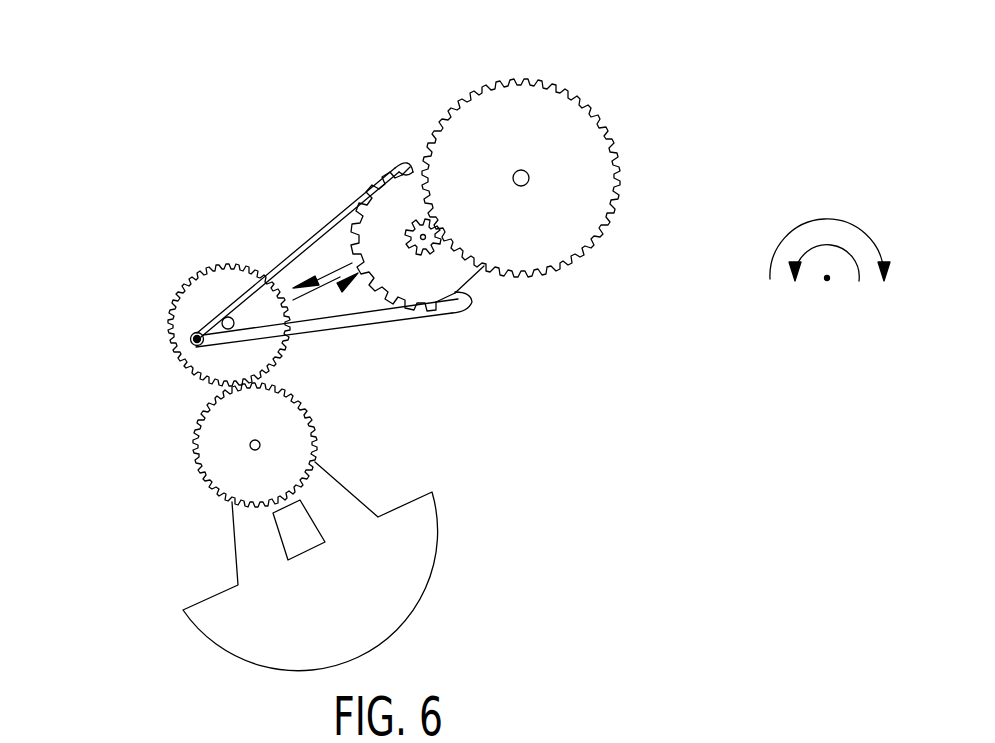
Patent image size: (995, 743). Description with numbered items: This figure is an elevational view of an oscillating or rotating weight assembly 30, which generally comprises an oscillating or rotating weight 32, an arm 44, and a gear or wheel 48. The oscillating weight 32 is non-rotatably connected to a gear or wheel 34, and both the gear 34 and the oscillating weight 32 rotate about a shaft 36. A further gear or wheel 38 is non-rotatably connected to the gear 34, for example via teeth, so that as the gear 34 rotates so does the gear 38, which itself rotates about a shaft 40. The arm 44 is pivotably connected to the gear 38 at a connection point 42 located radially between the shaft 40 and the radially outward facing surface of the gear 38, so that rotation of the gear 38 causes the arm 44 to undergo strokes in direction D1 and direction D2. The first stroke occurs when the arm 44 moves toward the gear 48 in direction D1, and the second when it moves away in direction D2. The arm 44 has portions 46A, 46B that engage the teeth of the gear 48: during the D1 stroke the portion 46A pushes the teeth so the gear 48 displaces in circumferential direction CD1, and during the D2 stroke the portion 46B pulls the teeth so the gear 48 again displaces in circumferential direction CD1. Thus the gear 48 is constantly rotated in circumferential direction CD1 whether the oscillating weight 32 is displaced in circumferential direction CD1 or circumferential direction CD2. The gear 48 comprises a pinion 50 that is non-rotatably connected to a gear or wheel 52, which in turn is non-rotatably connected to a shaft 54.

The oscillating weight assembly 30 is at (108, 80).
The oscillating weight 32 is at (442, 525).
The gear 34 is at (316, 428).
The shaft 36 is at (250, 443).
The gear 38 is at (218, 268).
The shaft 40 is at (226, 321).
The connection point 42 is at (190, 338).
The arm 44 is at (304, 244).
The portion 46A is at (453, 308).
The portion 46B is at (408, 162).
The gear 48 is at (415, 178).
The pinion 50 is at (433, 251).
The gear 52 is at (560, 93).
The shaft 54 is at (530, 176).
The direction D1 is at (326, 321).
The direction D2 is at (343, 335).
The circumferential direction CD1 is at (852, 265).
The circumferential direction CD2 is at (832, 220).